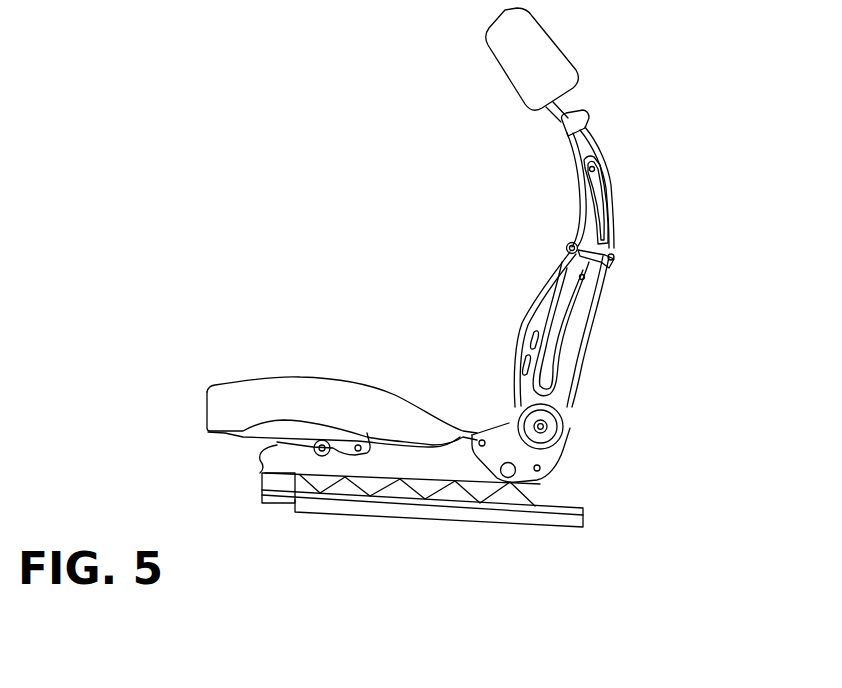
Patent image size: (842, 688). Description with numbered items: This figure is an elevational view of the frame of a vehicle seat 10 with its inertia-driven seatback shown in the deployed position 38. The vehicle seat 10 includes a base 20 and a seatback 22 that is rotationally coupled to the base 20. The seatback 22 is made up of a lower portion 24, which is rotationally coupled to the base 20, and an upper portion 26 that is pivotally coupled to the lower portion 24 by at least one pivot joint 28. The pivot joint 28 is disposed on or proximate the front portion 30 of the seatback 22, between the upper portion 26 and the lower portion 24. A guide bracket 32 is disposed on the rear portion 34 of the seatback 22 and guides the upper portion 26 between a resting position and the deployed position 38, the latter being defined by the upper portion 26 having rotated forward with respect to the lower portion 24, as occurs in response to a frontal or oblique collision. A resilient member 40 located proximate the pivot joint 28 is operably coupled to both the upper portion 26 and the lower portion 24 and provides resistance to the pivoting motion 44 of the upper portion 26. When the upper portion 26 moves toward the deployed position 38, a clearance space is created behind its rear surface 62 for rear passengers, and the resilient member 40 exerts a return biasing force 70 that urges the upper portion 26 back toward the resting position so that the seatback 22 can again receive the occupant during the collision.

The vehicle seat 10 is at (268, 163).
The base 20 is at (413, 423).
The seatback 22 is at (690, 254).
The lower portion 24 is at (562, 377).
The upper portion 26 is at (580, 145).
The pivot joint 28 is at (565, 249).
The front portion 30 is at (563, 220).
The guide bracket 32 is at (611, 257).
The rear portion 34 is at (624, 208).
The deployed position 38 is at (493, 317).
The resilient member 40 is at (613, 251).
The pivoting motion 44 is at (466, 0).
The rear surface 62 is at (613, 180).
The return biasing force 70 is at (597, 213).